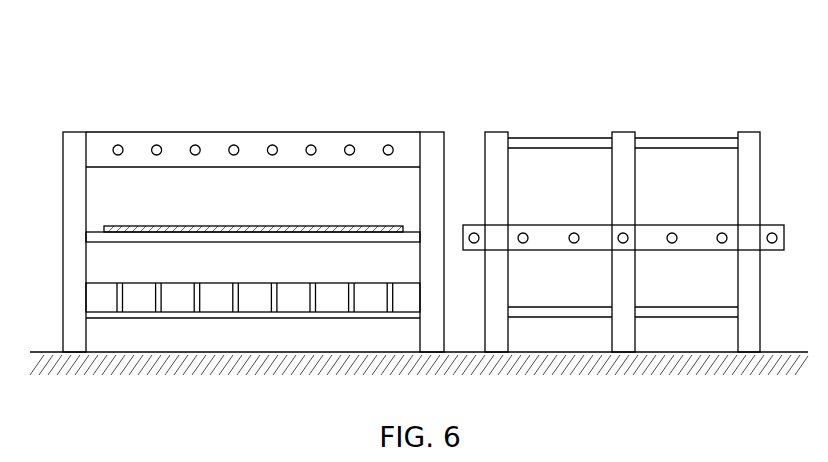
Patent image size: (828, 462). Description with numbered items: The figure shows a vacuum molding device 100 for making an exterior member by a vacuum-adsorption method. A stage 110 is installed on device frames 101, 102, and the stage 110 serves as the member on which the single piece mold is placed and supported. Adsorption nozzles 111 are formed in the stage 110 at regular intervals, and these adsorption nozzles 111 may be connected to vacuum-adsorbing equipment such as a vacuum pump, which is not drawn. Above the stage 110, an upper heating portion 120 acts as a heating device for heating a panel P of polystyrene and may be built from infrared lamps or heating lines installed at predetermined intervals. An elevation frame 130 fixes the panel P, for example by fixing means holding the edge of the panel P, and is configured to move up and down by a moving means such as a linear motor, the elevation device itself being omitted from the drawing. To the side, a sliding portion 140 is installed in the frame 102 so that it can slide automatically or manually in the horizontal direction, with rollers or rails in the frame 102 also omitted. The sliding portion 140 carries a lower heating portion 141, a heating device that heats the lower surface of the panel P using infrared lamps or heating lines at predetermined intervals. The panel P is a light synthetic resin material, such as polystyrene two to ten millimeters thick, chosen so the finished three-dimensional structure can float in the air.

The vacuum molding device 100 is at (397, 35).
The device frame 101 is at (72, 140).
The device frame 102 is at (693, 138).
The stage 110 is at (97, 283).
The adsorption nozzles 111 is at (117, 313).
The upper heating portion 120 is at (197, 144).
The elevation frame 130 is at (92, 240).
The sliding portion 140 is at (546, 224).
The lower heating portion 141 is at (672, 232).
The panel P is at (135, 224).